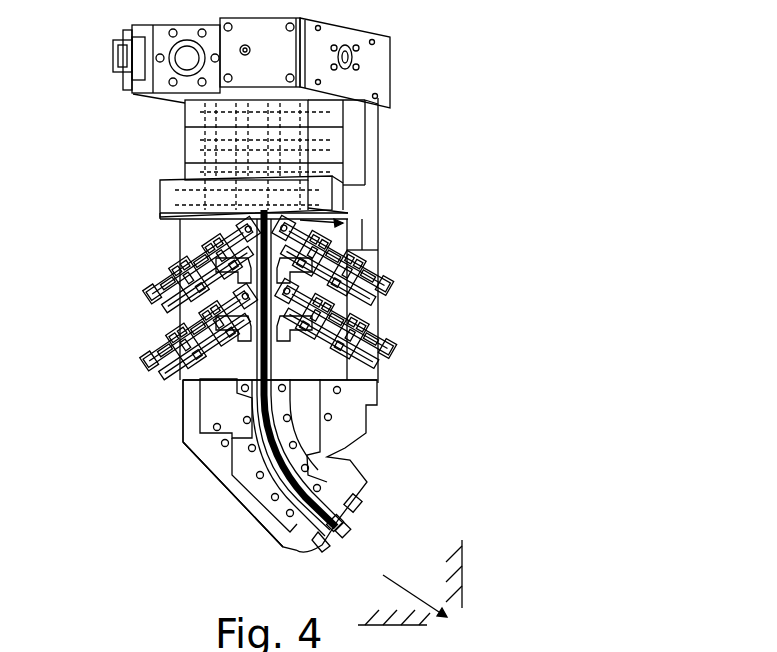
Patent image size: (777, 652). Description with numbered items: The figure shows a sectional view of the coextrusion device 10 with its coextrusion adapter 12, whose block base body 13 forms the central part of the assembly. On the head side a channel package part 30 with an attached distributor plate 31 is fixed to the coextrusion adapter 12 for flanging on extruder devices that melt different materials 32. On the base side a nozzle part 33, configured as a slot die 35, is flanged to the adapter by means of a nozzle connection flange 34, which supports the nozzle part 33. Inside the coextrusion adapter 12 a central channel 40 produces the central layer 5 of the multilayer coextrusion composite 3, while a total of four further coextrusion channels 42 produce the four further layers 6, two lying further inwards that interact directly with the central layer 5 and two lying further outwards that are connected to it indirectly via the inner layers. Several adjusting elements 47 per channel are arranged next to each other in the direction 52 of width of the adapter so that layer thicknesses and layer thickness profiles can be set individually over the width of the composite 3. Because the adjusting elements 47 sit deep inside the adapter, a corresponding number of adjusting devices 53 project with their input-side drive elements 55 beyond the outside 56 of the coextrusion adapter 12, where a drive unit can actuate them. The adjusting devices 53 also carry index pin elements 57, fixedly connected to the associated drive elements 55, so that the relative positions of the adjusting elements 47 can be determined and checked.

The distributor plate 31 is at (393, 70).
The channel package part 30 is at (370, 148).
The coextrusion adapter 12 is at (352, 216).
The direction of width 52 is at (380, 230).
The materials 32 is at (187, 62).
The central channel 40 is at (160, 205).
The adjusting elements 47 is at (188, 257).
The coextrusion channels 42 is at (170, 268).
The adjusting devices 53 is at (138, 308).
The outside 56 is at (380, 243).
The input-side drive elements 55 is at (383, 282).
The index pin elements 57 is at (383, 310).
The block base body 13 is at (190, 387).
The nozzle connection flange 34 is at (190, 420).
The multilayer coextrusion composite 3 is at (228, 465).
The coextrusion device 10 is at (215, 520).
The further coextruded layers 6 is at (348, 526).
The central layer 5 is at (333, 528).
The nozzle part 33 is at (483, 575).
The slot die 35 is at (358, 625).